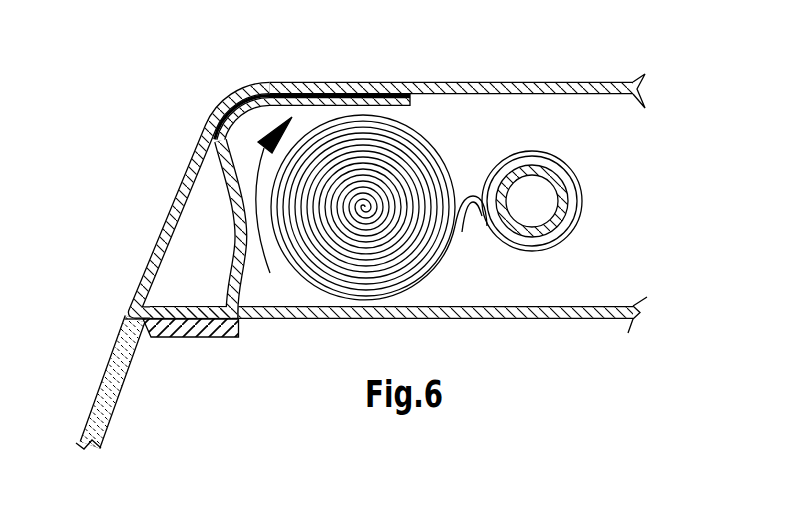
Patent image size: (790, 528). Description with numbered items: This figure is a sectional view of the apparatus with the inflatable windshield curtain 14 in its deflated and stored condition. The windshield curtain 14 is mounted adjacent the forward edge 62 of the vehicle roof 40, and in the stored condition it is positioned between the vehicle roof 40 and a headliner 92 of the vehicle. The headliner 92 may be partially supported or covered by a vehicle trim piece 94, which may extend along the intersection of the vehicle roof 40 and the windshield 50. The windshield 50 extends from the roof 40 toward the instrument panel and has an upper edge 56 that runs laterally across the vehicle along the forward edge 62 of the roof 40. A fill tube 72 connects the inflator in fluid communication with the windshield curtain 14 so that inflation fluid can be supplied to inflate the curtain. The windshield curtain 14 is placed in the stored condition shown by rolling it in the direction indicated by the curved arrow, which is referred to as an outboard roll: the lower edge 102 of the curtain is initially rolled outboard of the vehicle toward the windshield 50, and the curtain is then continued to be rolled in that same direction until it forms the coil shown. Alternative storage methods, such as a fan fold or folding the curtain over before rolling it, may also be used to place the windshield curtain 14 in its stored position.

The inflatable windshield curtain 14 is at (367, 267).
The vehicle roof 40 is at (551, 89).
The windshield 50 is at (115, 364).
The upper edge 56 is at (126, 330).
The forward edge 62 is at (158, 245).
The fill tube 72 is at (533, 173).
The headliner 92 is at (471, 313).
The vehicle trim piece 94 is at (193, 338).
The lower edge 102 is at (358, 207).